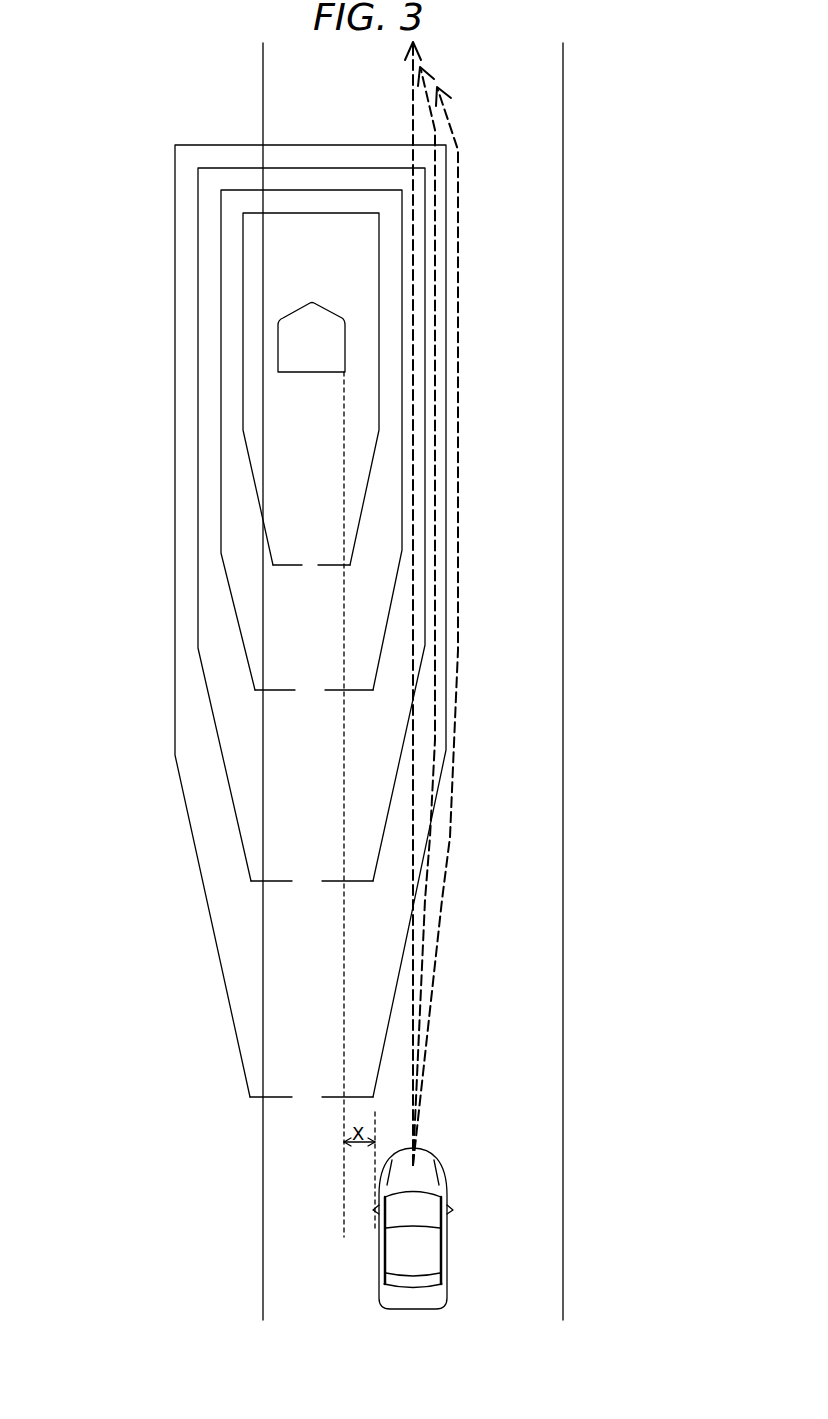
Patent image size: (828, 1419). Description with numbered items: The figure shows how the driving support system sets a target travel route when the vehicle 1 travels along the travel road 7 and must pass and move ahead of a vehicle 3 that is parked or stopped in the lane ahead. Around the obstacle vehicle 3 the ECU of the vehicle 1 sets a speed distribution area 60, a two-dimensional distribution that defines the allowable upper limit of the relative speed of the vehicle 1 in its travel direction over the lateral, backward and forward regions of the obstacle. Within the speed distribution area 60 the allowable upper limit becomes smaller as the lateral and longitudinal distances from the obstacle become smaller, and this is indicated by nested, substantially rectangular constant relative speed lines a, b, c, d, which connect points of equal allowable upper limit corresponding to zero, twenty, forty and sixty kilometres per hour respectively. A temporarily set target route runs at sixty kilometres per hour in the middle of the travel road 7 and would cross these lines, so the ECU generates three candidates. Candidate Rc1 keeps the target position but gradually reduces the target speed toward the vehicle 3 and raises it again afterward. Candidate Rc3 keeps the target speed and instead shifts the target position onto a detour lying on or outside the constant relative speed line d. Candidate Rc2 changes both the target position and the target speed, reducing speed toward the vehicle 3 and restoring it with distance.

The vehicle 1 is at (445, 1253).
The vehicle 3 is at (306, 326).
The travel road 7 is at (550, 201).
The speed distribution area 60 is at (140, 148).
The candidate for the target travel route Rc1 is at (413, 837).
The candidate for the target travel route Rc2 is at (435, 757).
The candidate for the target travel route Rc3 is at (460, 683).
The constant relative speed line a is at (275, 567).
The constant relative speed line b is at (255, 692).
The constant relative speed line c is at (251, 883).
The constant relative speed line d is at (250, 1099).